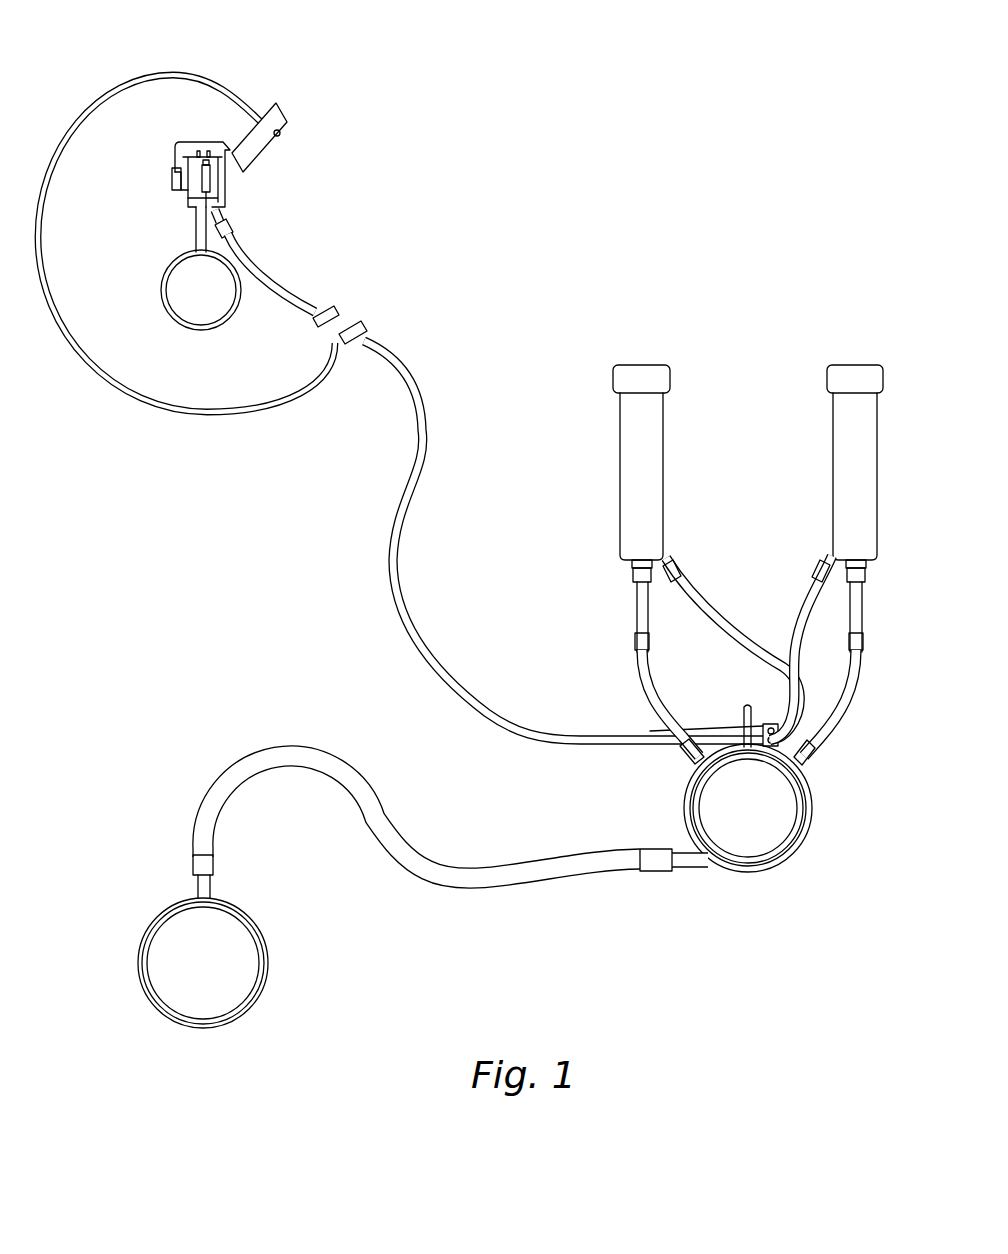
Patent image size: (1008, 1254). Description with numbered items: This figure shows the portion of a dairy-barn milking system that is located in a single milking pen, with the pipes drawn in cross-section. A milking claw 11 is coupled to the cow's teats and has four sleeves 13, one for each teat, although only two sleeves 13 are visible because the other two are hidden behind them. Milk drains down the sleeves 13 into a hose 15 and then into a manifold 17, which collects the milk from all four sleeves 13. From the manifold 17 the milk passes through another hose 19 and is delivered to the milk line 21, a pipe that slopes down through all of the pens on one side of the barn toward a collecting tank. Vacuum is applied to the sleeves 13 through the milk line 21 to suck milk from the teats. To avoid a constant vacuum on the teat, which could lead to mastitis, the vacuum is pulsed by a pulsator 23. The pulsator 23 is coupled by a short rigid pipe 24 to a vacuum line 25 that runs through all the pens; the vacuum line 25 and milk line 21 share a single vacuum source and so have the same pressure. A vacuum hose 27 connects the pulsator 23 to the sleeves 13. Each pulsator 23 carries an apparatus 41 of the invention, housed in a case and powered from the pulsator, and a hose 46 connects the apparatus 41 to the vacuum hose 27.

The milking claw 11 is at (664, 457).
The sleeves 13 is at (664, 517).
The hose 15 is at (638, 670).
The manifold 17 is at (760, 843).
The hose 19 is at (523, 857).
The milk line 21 is at (259, 927).
The pulsator 23 is at (202, 177).
The short rigid pipe 24 is at (195, 236).
The vacuum line 25 is at (164, 303).
The vacuum hose 27 is at (419, 388).
The apparatus 41 is at (290, 118).
The hose 46 is at (172, 75).